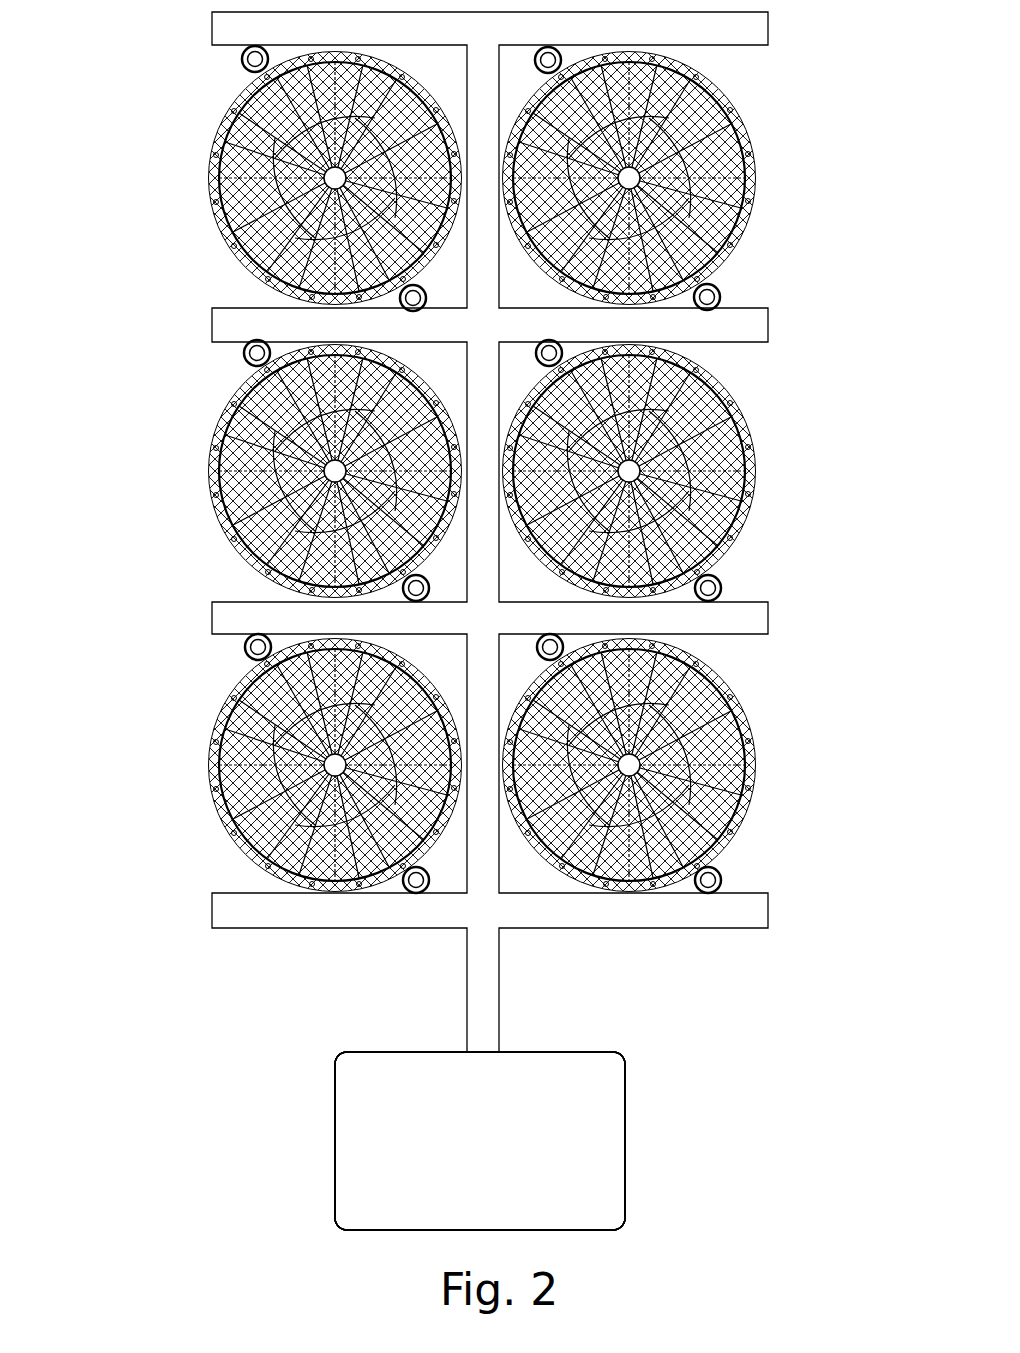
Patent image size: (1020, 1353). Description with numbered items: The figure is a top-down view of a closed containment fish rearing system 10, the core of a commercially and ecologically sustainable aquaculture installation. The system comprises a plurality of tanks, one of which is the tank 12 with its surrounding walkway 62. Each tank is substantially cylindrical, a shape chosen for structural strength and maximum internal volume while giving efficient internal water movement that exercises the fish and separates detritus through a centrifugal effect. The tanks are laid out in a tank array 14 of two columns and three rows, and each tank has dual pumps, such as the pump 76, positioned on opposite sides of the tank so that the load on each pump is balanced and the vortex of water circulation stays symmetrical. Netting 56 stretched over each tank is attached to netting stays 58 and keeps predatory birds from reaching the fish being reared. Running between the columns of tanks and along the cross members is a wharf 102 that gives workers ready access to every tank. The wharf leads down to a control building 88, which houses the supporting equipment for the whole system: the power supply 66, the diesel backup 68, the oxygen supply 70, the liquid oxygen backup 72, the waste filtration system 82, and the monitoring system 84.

The closed containment fish rearing system 10 is at (247, 1023).
The tank 12 is at (771, 160).
The tank array 14 is at (148, 853).
The netting 56 is at (721, 432).
The netting stays 58 is at (750, 702).
The walkway 62 is at (735, 264).
The pump 76 is at (728, 580).
The control building 88 is at (631, 1147).
The wharf 102 is at (540, 912).
The power supply 66 is at (480, 1141).
The diesel backup 68 is at (480, 1141).
The oxygen supply 70 is at (480, 1141).
The liquid oxygen backup 72 is at (480, 1141).
The waste filtration system 82 is at (480, 1141).
The monitoring system 84 is at (480, 1141).